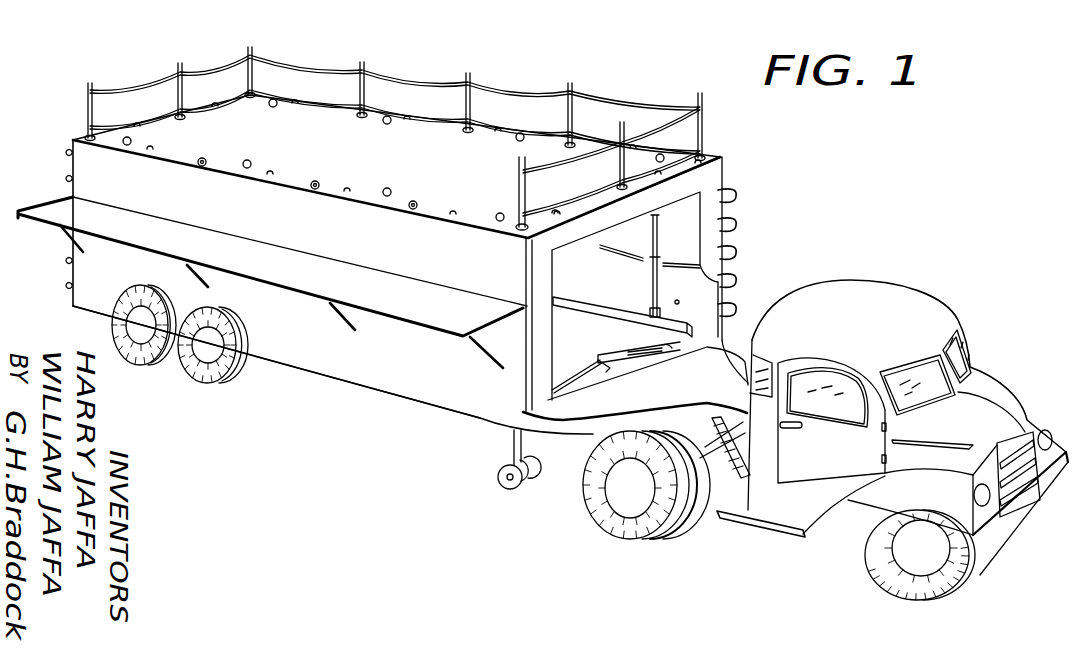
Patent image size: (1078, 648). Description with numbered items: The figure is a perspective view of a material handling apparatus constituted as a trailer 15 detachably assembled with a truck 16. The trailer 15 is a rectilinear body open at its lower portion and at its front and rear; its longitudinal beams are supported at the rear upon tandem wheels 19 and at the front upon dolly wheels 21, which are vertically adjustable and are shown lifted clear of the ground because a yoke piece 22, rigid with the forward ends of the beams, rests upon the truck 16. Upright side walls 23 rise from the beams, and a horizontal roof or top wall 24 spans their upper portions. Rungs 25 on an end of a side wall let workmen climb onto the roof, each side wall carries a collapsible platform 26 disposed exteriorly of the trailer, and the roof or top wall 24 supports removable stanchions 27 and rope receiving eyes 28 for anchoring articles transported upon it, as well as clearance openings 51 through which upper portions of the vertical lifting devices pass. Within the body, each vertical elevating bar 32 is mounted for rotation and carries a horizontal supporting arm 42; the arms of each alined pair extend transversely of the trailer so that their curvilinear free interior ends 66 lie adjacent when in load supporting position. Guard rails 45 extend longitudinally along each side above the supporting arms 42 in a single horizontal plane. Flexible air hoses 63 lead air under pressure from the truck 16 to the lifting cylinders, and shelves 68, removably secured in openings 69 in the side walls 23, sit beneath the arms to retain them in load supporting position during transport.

The trailer 15 is at (422, 386).
The truck 16 is at (902, 294).
The tandem wheels 19 is at (165, 366).
The dolly wheels 21 is at (532, 480).
The yoke piece 22 is at (635, 380).
The side walls 23 is at (740, 204).
The roof or top wall 24 is at (396, 166).
The rungs 25 is at (733, 258).
The collapsible platform 26 is at (310, 283).
The removable stanchions 27 is at (253, 72).
The rope receiving eyes 28 is at (218, 107).
The vertical elevating bar 32 is at (652, 274).
The supporting arms 42 is at (578, 372).
The guard rails 45 is at (599, 287).
The clearance openings 51 is at (277, 106).
The flexible air hoses 63 is at (717, 476).
The free interior ends 66 is at (613, 365).
The shelves 68 is at (666, 345).
The openings 69 is at (638, 295).